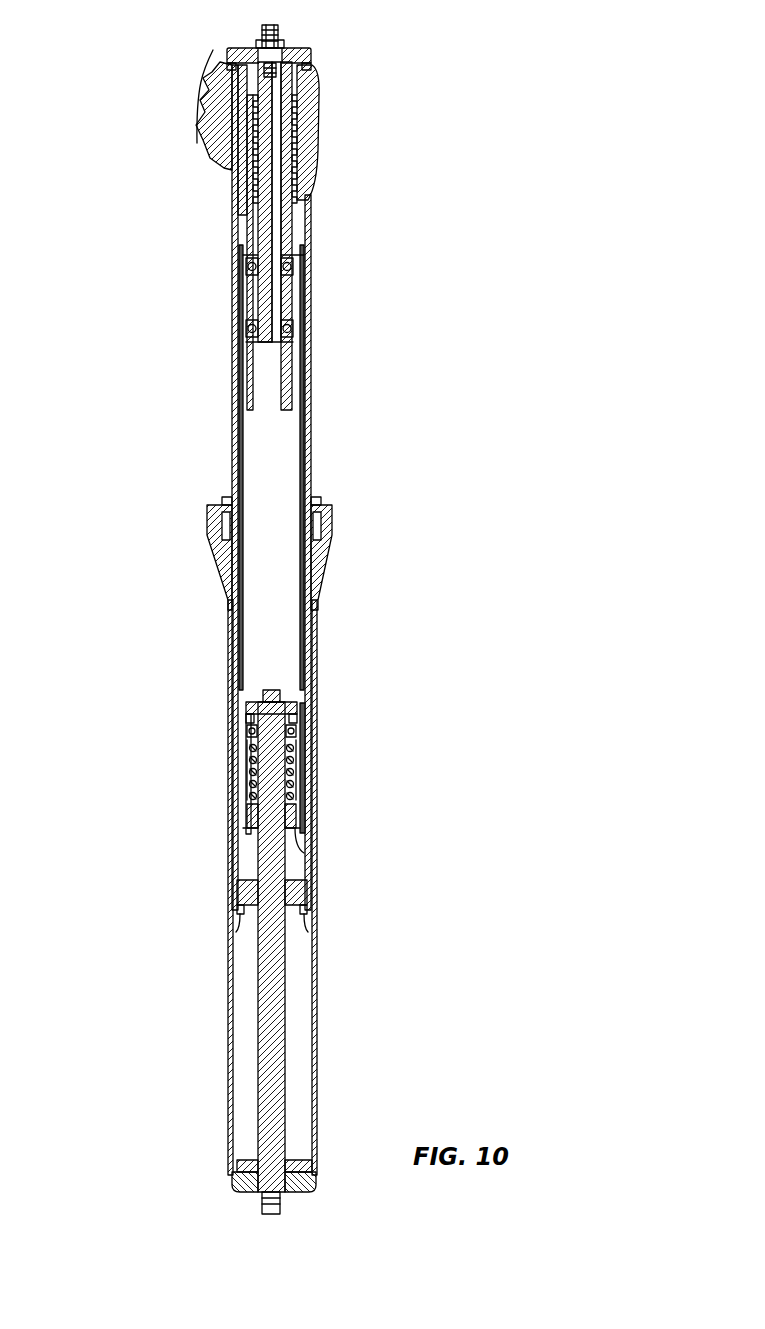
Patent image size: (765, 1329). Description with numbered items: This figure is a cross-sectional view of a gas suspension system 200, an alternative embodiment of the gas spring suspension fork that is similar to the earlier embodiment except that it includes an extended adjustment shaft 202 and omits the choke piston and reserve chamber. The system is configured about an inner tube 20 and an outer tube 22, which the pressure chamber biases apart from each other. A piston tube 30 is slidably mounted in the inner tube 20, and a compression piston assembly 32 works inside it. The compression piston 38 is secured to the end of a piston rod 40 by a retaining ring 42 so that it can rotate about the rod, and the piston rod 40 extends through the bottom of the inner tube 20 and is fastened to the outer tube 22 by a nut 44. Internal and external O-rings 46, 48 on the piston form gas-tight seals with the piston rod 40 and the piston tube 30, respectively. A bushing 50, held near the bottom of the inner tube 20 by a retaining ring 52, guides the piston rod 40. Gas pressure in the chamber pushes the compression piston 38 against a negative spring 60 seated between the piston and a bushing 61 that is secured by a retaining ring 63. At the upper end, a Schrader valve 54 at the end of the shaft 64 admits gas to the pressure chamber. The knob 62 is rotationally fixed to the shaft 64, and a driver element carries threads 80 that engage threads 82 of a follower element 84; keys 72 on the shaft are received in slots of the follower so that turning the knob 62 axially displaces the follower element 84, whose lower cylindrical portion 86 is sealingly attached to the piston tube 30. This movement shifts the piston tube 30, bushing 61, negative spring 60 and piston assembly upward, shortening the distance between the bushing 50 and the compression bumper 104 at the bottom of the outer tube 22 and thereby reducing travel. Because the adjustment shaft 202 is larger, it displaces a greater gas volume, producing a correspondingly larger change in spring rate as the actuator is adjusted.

The gas suspension system 200 is at (103, 189).
The inner tube 20 is at (232, 405).
The outer tube 22 is at (318, 1007).
The piston tube 30 is at (238, 262).
The compression piston assembly 32 is at (344, 791).
The compression piston 38 is at (300, 703).
The piston rod 40 is at (272, 1001).
The retaining ring 42 is at (255, 697).
The nut 44 is at (262, 1198).
The internal O-ring 46 is at (252, 733).
The external O-ring 48 is at (305, 720).
The bushing 50 is at (245, 893).
The retaining ring 52 is at (241, 919).
The Schrader valve 54 is at (276, 24).
The negative spring 60 is at (252, 773).
The bushing 61 is at (252, 819).
The knob 62 is at (312, 50).
The retaining ring 63 is at (301, 848).
The shaft 64 is at (278, 87).
The keys 72 is at (282, 185).
The threads 80 is at (288, 108).
The threads 82 is at (304, 162).
The follower element 84 is at (284, 235).
The cylindrical portion 86 is at (298, 258).
The compression bumper 104 is at (237, 1164).
The extended adjustment shaft 202 is at (284, 316).